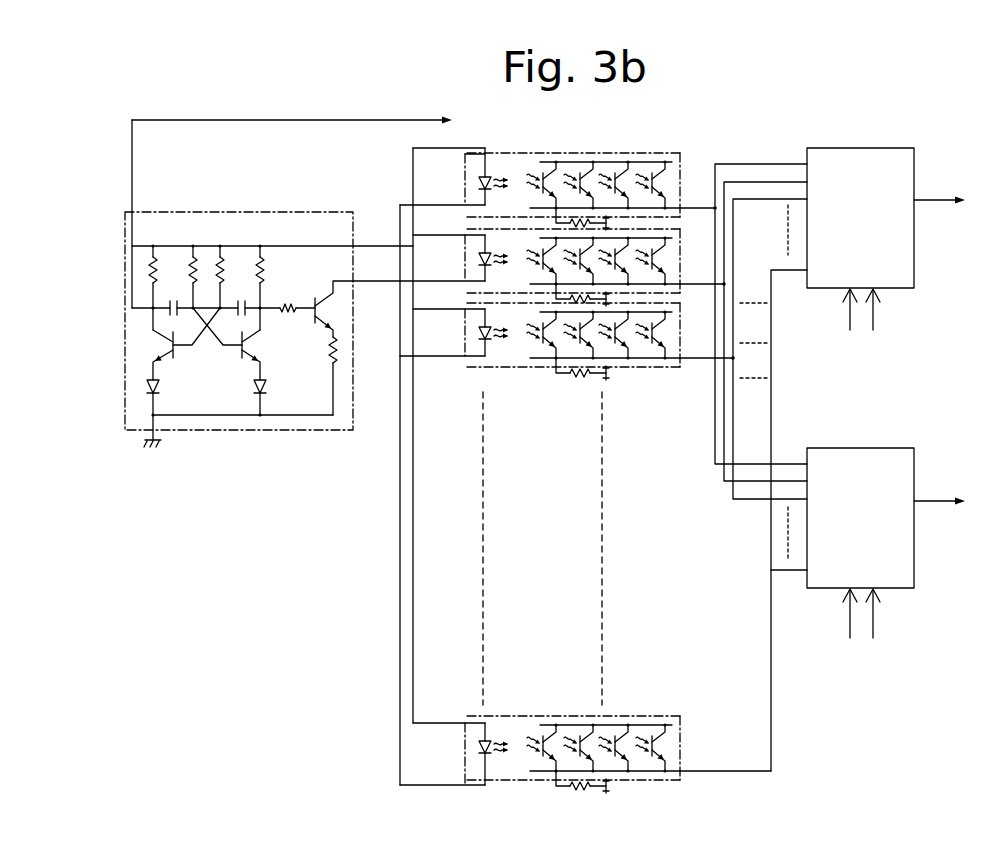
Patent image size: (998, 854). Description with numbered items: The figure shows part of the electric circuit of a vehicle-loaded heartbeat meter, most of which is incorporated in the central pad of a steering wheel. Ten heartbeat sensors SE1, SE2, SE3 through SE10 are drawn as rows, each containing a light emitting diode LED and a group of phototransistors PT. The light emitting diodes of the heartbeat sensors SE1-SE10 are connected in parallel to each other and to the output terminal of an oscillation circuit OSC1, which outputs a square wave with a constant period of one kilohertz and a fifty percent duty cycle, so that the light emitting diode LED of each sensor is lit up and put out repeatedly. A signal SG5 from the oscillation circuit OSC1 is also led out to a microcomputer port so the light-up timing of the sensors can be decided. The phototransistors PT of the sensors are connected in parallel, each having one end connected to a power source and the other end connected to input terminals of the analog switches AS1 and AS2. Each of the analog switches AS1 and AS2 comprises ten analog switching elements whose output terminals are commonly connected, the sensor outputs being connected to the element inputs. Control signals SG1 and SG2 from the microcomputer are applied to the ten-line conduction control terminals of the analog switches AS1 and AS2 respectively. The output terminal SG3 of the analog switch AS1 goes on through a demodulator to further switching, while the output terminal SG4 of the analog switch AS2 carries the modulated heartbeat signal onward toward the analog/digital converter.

The oscillation circuit OSC1 is at (226, 431).
The signal SG5 is at (313, 123).
The light emitting diode LED is at (474, 184).
The phototransistor PT is at (550, 168).
The heartbeat sensor SE1 is at (454, 188).
The heartbeat sensor SE2 is at (465, 287).
The heartbeat sensor SE3 is at (463, 368).
The heartbeat sensor SE10 is at (462, 723).
The analog switch AS1 is at (852, 148).
The analog switch AS2 is at (861, 448).
The control signal SG1 is at (862, 324).
The control signal SG2 is at (862, 627).
The output terminal SG3 is at (952, 192).
The modulated heartbeat signal SG4 is at (951, 493).